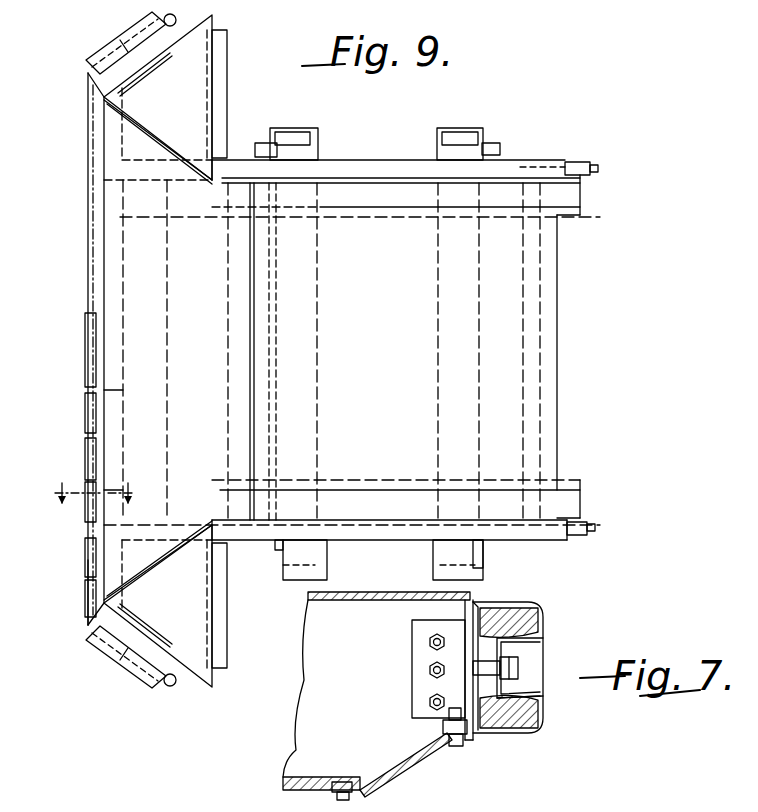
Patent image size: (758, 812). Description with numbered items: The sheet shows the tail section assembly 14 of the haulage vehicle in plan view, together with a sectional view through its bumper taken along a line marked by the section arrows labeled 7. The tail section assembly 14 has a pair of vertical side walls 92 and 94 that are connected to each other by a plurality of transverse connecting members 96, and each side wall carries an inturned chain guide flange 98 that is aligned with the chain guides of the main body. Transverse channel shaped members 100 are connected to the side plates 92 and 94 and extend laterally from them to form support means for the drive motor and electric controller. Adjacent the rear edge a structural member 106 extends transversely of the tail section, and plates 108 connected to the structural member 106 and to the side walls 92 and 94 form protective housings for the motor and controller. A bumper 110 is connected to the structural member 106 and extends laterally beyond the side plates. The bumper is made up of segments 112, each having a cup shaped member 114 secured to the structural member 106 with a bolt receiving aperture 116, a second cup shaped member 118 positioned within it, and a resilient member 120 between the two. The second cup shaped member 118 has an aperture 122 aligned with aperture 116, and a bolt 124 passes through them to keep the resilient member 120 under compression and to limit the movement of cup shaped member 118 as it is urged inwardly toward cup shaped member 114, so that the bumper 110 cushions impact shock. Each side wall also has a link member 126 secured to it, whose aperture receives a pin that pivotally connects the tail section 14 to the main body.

In FIG. 9, the tail section assembly 14 is at (385, 146).
In FIG. 9, the section line 7- 7 is at (94, 483).
In FIG. 9, the vertical side wall 92 is at (390, 183).
In FIG. 9, the vertical side wall 94 is at (366, 520).
In FIG. 9, the transverse connecting members 96 is at (232, 346).
In FIG. 9, the inturned chain guide flanges 98 is at (572, 195).
In FIG. 9, the transverse channel shaped members 100 is at (306, 160).
In FIG. 9, the structural member 106 is at (96, 352).
In FIG. 7, the structural member 106 is at (462, 607).
In FIG. 9, the plates 108 is at (174, 112).
In FIG. 9, the bumper 110 is at (84, 452).
In FIG. 9, the bumper segments 112 is at (88, 596).
In FIG. 7, the bumper segments 112 is at (545, 732).
In FIG. 7, the cup shaped member 114 is at (488, 605).
In FIG. 7, the bolt receiving aperture 116 is at (465, 688).
In FIG. 7, the second cup shaped member 118 is at (546, 622).
In FIG. 7, the resilient member 120 is at (540, 610).
In FIG. 7, the aperture 122 is at (535, 698).
In FIG. 7, the bolt 124 is at (520, 665).
In FIG. 9, the link member 126 is at (598, 155).